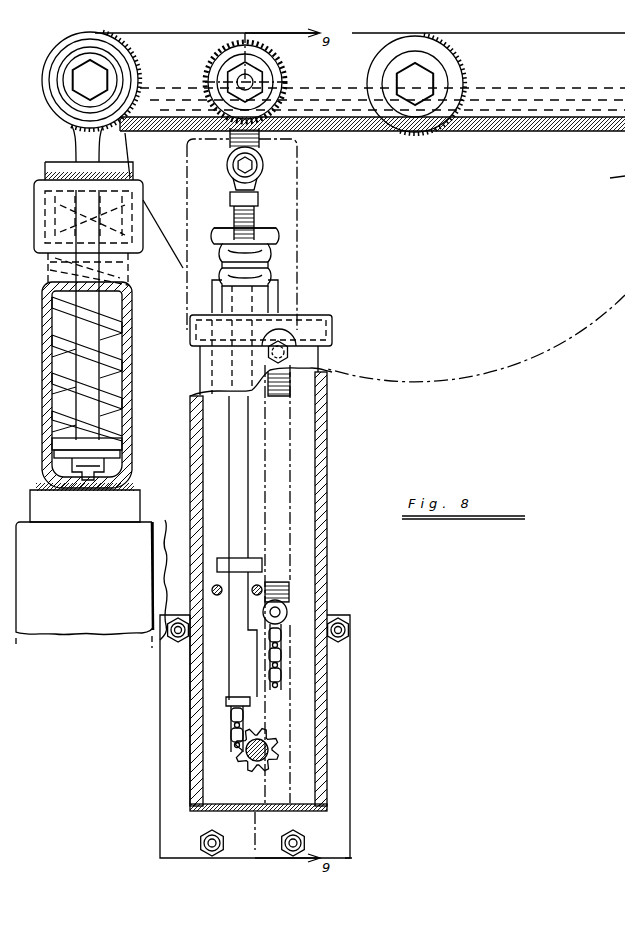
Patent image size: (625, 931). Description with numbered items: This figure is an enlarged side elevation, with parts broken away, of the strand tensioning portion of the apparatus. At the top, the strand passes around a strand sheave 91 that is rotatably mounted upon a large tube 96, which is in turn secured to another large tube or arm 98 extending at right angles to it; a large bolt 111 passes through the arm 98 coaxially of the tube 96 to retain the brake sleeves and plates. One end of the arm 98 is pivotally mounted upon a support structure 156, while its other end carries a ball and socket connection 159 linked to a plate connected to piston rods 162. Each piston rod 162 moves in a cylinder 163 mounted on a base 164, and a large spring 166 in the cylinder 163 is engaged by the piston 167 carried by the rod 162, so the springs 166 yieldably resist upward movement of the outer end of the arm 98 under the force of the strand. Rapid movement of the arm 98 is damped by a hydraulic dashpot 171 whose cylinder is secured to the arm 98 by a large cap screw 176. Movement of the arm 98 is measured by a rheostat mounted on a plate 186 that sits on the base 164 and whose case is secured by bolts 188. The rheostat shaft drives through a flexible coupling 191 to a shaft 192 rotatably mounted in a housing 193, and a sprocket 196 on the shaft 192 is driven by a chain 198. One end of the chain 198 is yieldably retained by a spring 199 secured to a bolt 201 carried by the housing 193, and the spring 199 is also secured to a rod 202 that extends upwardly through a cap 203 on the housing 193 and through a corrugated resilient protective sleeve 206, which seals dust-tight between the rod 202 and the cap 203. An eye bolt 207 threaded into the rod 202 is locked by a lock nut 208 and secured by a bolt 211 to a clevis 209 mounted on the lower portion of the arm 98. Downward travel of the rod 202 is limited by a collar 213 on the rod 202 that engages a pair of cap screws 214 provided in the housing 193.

The strand sheave 91 is at (478, 378).
The large tube 96 is at (410, 125).
The tube or arm 98 is at (540, 108).
The large bolt 111 is at (425, 85).
The support structure 156 is at (605, 181).
The ball and socket connection 159 is at (72, 106).
The piston rod 162 is at (94, 332).
The cylinder 163 is at (128, 393).
The base 164 is at (98, 572).
The large spring 166 is at (103, 383).
The piston 167 is at (105, 458).
The hydraulic dashpot 171 is at (0, 712).
The large cap screw 176 is at (262, 72).
The plate 186 is at (335, 698).
The bolt 188 is at (343, 630).
The flexible coupling 191 is at (298, 243).
The shaft 192 is at (262, 746).
The housing 193 is at (328, 582).
The sprocket 196 is at (245, 762).
The chain 198 is at (290, 680).
The spring 199 is at (284, 600).
The bolt 201 is at (300, 332).
The rod 202 is at (232, 672).
The cap 203 is at (333, 336).
The corrugated resilient protective sleeve 206 is at (265, 269).
The eye bolt 207 is at (258, 176).
The lock nut 208 is at (255, 201).
The clevis 209 is at (252, 158).
The bolt 211 is at (241, 167).
The collar 213 is at (216, 565).
The cap screw 214 is at (255, 590).